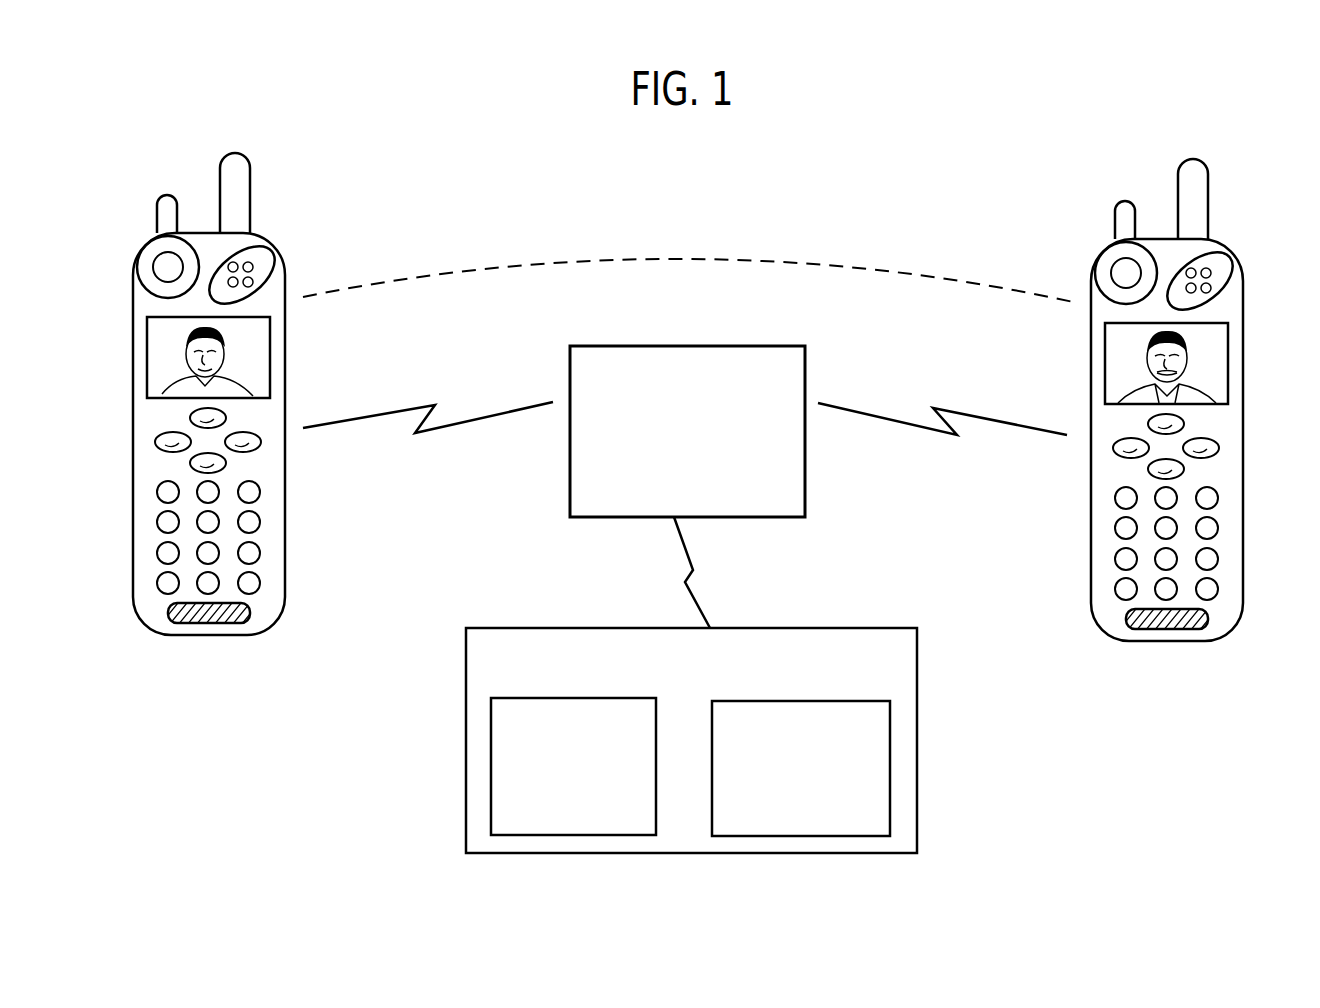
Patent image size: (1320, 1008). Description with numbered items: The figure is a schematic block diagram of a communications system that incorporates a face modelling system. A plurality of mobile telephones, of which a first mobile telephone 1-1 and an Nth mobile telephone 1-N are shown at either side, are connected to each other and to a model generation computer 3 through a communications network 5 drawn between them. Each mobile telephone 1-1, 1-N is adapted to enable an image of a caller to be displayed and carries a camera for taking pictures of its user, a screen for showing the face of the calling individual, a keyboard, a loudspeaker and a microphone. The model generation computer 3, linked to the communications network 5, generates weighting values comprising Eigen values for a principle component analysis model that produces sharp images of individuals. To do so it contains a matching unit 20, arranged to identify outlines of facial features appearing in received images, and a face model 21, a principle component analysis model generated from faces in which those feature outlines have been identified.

The mobile telephone 1-1 is at (133, 322).
The mobile telephone 1-N is at (1204, 400).
The model generation computer 3 is at (691, 713).
The communications network 5 is at (748, 346).
The matching unit 20 is at (573, 766).
The face model 21 is at (801, 768).